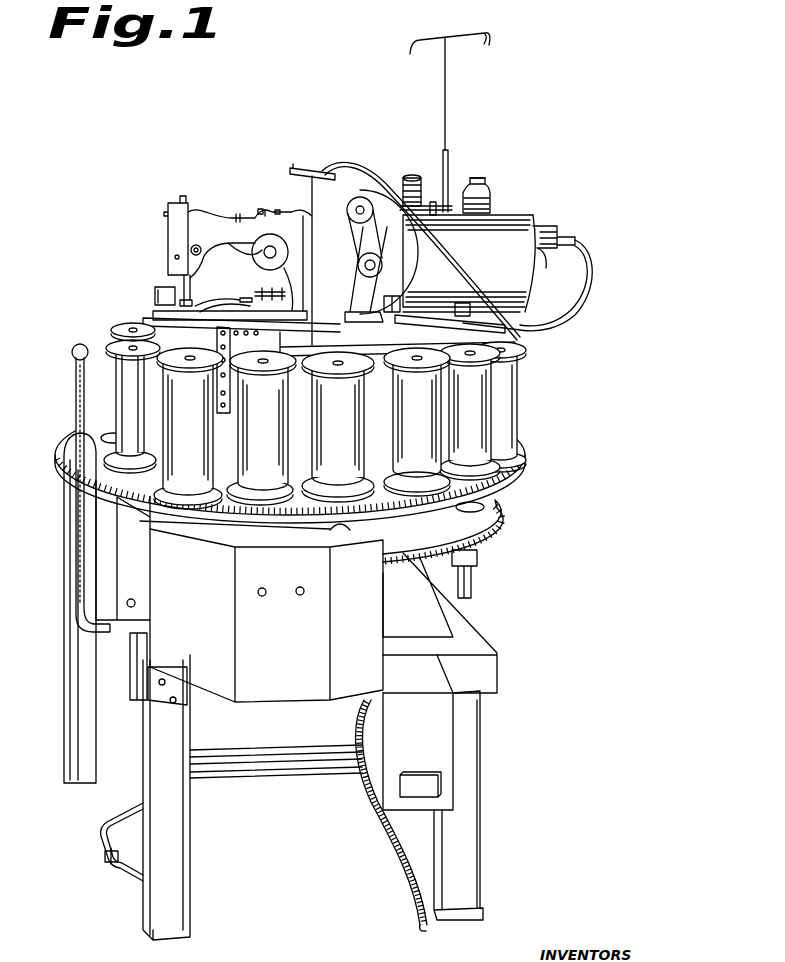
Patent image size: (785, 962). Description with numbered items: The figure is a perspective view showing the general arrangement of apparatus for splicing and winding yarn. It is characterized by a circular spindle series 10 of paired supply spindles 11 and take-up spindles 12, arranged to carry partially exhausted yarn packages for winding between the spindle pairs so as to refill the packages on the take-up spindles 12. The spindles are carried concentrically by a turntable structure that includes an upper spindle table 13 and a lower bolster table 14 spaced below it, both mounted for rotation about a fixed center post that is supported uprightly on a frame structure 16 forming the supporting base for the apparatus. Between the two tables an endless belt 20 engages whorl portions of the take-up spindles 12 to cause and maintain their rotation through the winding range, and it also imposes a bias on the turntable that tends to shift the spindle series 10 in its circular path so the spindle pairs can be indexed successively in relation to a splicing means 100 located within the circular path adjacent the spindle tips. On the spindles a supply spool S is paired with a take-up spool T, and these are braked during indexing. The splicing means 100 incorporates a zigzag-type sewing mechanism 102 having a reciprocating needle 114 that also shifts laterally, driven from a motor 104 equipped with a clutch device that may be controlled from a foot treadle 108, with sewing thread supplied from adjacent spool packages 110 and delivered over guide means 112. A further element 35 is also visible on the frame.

The circular spindle series 10 is at (110, 325).
The supply spindle 11 is at (135, 346).
The take-up spindle 12 is at (188, 358).
The upper spindle table 13 is at (523, 466).
The lower bolster table 14 is at (494, 527).
The frame structure 16 is at (66, 676).
The endless belt 20 is at (484, 504).
The handle rod 35 is at (78, 530).
The splicing means 100 is at (160, 222).
The sewing mechanism 102 is at (200, 213).
The motor 104 is at (511, 214).
The foot treadle 108 is at (100, 826).
The spool packages 110 is at (411, 178).
The guide means 112 is at (415, 48).
The reciprocating needle 114 is at (183, 196).
The supply spool S is at (123, 478).
The take-up spool T is at (181, 489).